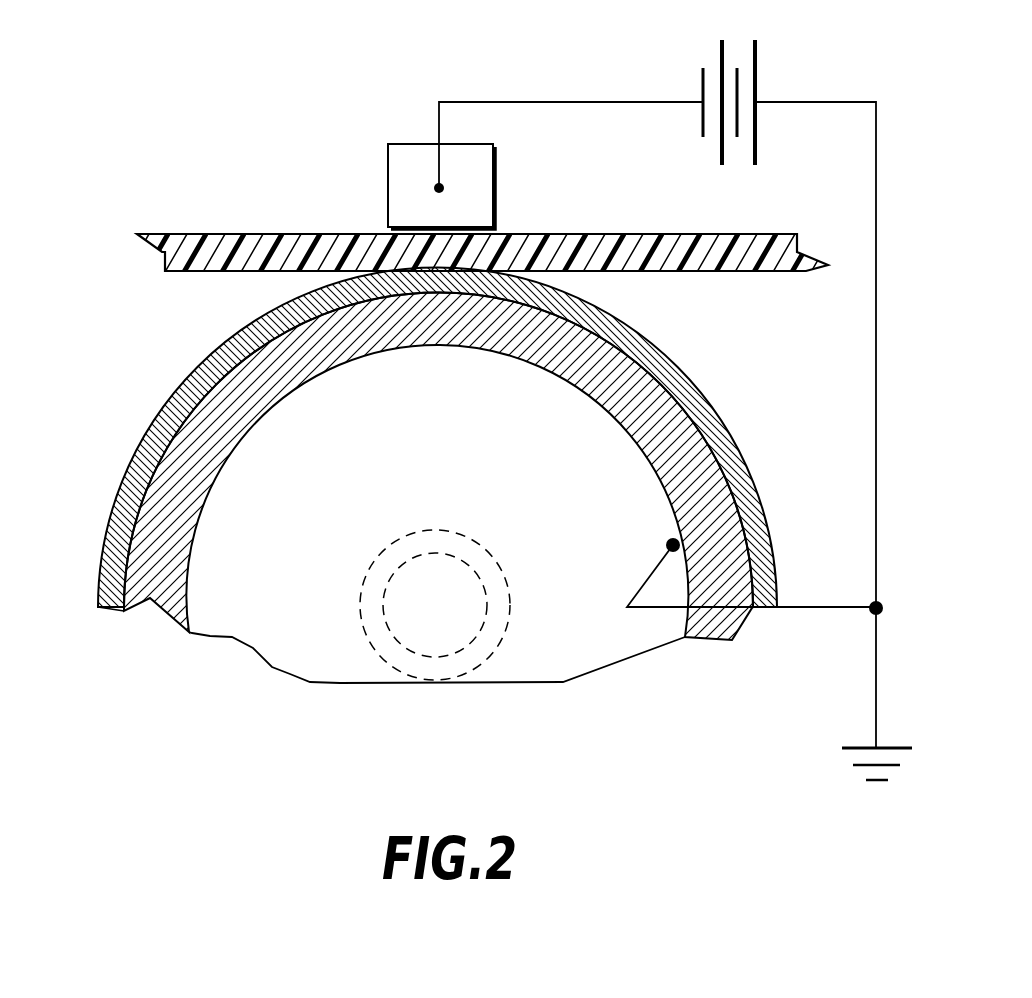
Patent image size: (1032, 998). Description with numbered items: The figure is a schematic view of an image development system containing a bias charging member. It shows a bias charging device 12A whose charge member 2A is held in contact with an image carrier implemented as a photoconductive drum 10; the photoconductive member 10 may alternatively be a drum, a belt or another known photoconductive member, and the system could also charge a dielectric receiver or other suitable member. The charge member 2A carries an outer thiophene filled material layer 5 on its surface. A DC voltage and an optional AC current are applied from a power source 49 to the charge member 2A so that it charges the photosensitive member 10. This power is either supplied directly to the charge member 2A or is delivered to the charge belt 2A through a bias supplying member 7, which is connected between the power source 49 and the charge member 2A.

The bias charging device 12A is at (324, 77).
The charge member 2A is at (100, 232).
The outer thiophene filled material layer 5 is at (158, 256).
The bias supplying member 7 is at (396, 162).
The power source 49 is at (622, 101).
The photoconductive drum 10 is at (764, 400).